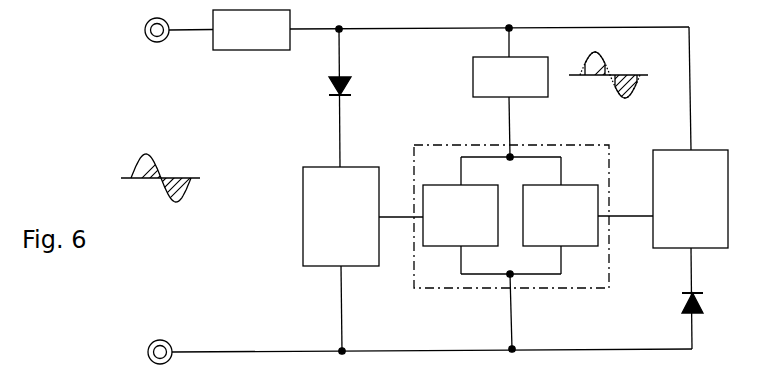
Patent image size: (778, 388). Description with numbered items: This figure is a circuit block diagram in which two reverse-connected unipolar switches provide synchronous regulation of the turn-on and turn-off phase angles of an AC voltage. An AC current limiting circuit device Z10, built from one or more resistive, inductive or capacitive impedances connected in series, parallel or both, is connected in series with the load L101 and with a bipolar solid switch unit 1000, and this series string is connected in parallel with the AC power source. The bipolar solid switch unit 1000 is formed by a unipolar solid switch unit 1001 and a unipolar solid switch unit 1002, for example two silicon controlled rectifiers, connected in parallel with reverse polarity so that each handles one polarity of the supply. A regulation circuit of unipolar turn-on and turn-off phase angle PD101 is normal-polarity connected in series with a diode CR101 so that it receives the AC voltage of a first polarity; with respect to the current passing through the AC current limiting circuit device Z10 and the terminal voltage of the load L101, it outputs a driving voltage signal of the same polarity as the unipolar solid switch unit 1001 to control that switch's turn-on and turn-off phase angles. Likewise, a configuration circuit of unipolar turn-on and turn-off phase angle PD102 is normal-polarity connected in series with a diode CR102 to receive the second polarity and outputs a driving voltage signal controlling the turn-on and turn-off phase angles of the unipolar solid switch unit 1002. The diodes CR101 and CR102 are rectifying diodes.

The AC current limiting circuit device Z10 is at (251, 30).
The diode CR102 is at (347, 84).
The load L101 is at (510, 92).
The bipolar solid switch unit 1000 is at (465, 141).
The unipolar solid switch unit 1001 is at (588, 215).
The unipolar solid switch unit 1002 is at (460, 215).
The configuration circuit of unipolar turn-on and turn-off phase angle PD102 is at (363, 259).
The regulation circuit of unipolar turn-on and turn-off phase angle PD101 is at (690, 199).
The diode CR101 is at (681, 303).